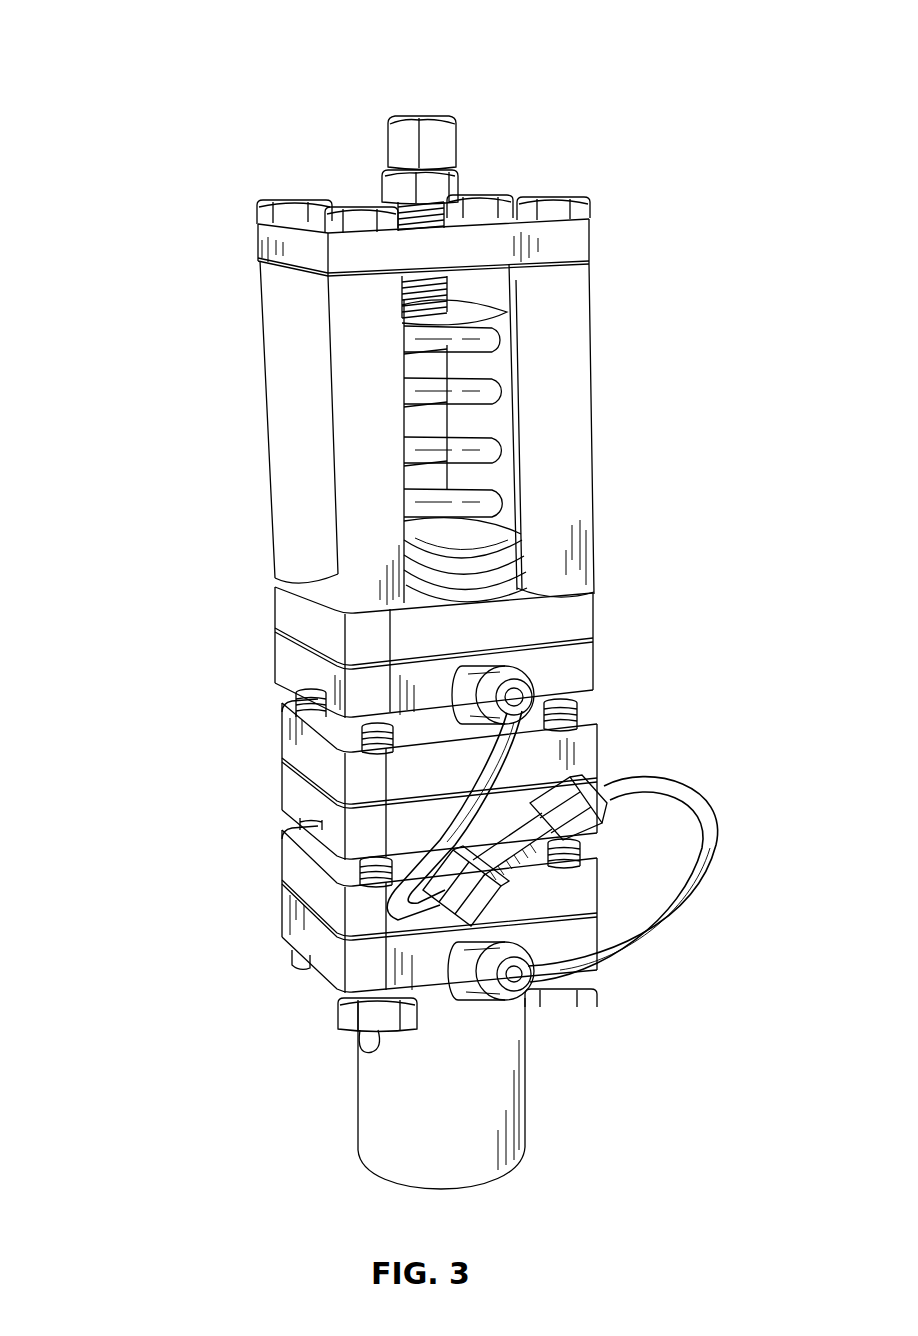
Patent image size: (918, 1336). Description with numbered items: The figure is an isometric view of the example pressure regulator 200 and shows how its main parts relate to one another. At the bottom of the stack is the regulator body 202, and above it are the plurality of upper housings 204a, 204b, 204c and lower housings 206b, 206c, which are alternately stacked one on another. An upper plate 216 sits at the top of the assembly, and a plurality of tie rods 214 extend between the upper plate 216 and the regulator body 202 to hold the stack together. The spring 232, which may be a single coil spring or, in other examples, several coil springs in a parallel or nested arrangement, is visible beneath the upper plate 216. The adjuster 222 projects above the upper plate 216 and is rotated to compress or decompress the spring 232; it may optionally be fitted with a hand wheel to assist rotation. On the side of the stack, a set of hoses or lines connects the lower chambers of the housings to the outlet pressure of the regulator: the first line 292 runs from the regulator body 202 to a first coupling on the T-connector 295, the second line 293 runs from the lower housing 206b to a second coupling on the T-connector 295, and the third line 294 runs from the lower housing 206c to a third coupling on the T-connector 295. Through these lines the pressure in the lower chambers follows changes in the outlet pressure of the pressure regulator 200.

The pressure regulator 200 is at (128, 38).
The regulator body 202 is at (290, 918).
The upper housing 204a is at (295, 868).
The upper housing 204b is at (295, 745).
The upper housing 204c is at (290, 610).
The lower housing 206b is at (298, 792).
The lower housing 206c is at (290, 655).
The tie rods 214 is at (281, 388).
The upper plate 216 is at (572, 244).
The adjuster 222 is at (448, 143).
The spring 232 is at (508, 452).
The first line 292 is at (705, 860).
The second line 293 is at (522, 852).
The third line 294 is at (575, 693).
The T-connector 295 is at (552, 858).